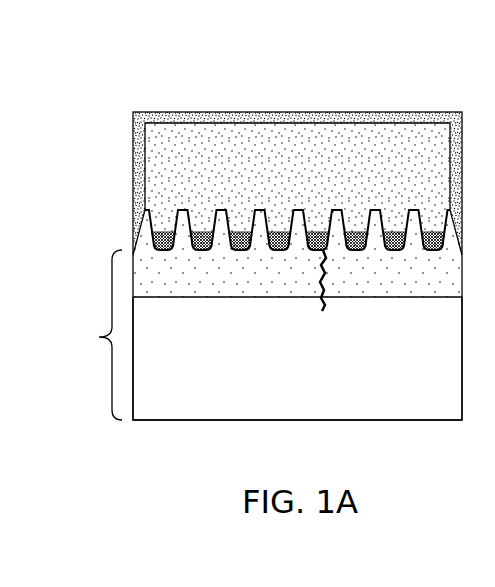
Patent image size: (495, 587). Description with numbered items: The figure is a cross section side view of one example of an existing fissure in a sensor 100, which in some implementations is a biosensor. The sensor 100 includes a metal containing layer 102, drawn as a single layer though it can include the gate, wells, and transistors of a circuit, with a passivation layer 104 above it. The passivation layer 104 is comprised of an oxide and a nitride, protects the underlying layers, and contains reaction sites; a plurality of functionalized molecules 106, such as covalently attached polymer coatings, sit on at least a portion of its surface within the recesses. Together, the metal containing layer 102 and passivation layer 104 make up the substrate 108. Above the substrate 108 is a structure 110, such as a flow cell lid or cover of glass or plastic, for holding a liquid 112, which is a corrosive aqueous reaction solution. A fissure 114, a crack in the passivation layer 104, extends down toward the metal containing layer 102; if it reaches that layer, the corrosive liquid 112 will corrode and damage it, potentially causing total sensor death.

The sensor 100 is at (180, 24).
The metal containing layer 102 is at (192, 347).
The passivation layer 104 is at (192, 285).
The functionalized molecules 106 is at (283, 228).
The substrate 108 is at (87, 335).
The structure for holding a liquid 110 is at (453, 112).
The liquid 112 is at (423, 173).
The fissure 114 is at (322, 311).